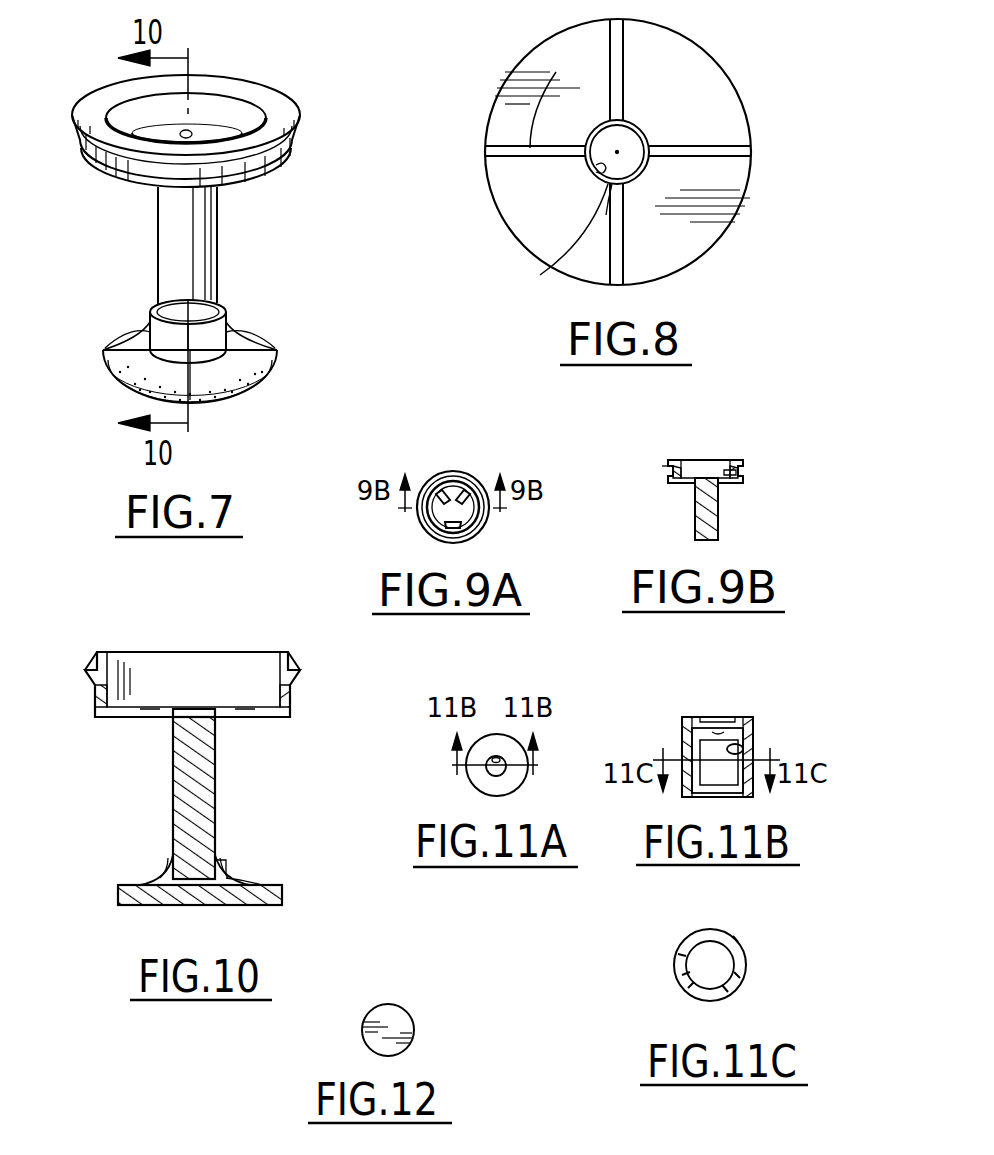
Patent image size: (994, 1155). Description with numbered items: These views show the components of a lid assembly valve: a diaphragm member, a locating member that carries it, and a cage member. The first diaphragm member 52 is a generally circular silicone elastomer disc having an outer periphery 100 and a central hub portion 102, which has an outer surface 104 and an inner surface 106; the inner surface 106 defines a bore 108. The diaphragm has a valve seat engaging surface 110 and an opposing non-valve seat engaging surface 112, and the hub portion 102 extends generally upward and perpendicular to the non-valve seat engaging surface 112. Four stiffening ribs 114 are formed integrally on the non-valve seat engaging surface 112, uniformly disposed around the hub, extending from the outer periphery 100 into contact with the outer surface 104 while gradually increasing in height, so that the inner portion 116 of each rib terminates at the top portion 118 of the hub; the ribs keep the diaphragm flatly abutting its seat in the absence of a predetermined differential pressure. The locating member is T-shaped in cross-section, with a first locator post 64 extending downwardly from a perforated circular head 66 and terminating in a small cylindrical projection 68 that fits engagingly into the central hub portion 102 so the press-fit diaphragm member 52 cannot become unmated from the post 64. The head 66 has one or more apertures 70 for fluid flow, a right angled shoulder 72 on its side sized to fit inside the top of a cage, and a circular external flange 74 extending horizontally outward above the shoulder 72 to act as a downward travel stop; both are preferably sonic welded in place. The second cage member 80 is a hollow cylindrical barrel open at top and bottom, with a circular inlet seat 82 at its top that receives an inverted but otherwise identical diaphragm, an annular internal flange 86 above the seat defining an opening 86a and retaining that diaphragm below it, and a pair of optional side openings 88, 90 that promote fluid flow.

In FIG. 8, the first diaphragm member 52 is at (768, 62).
In FIG. 10, the first diaphragm member 52 is at (118, 898).
In FIG. 12, the first diaphragm member 52 is at (412, 1005).
In FIG. 7, the first locator post 64 is at (220, 222).
In FIG. 9B, the first locator post 64 is at (720, 503).
In FIG. 10, the first locator post 64 is at (219, 757).
In FIG. 7, the perforated circular head 66 is at (186, 131).
In FIG. 9A, the perforated circular head 66 is at (470, 478).
In FIG. 9B, the perforated circular head 66 is at (690, 458).
In FIG. 10, the perforated circular head 66 is at (192, 651).
In FIG. 9B, the small cylindrical projection 68 is at (712, 542).
In FIG. 9A, the apertures 70 is at (428, 493).
In FIG. 9B, the apertures 70 is at (722, 464).
In FIG. 9B, the right angled shoulder 72 is at (676, 490).
In FIG. 10, the circular external flange 74 is at (294, 665).
In FIG. 11A, the second cage member 80 is at (465, 785).
In FIG. 11B, the second cage member 80 is at (668, 732).
In FIG. 11C, the second cage member 80 is at (758, 960).
In FIG. 11B, the circular inlet seat 82 is at (708, 718).
In FIG. 11A, the annular internal flange 86 is at (490, 756).
In FIG. 11B, the annular internal flange 86 is at (725, 722).
In FIG. 11B, the opening 86a is at (716, 728).
In FIG. 11B, the opening 88 is at (745, 752).
In FIG. 11C, the opening 88 is at (718, 932).
In FIG. 11C, the opening 90 is at (720, 995).
In FIG. 7, the outer periphery 100 is at (280, 342).
In FIG. 8, the outer periphery 100 is at (752, 176).
In FIG. 8, the central hub portion 102 is at (645, 134).
In FIG. 10, the central hub portion 102 is at (240, 850).
In FIG. 8, the outer surface 104 is at (646, 170).
In FIG. 7, the inner surface 106 is at (168, 300).
In FIG. 8, the inner surface 106 is at (598, 170).
In FIG. 8, the bore 108 is at (632, 132).
In FIG. 7, the valve seat engaging surface 110 is at (238, 352).
In FIG. 8, the valve seat engaging surface 110 is at (650, 252).
In FIG. 10, the valve seat engaging surface 110 is at (258, 878).
In FIG. 7, the non-valve seat engaging surface 112 is at (232, 397).
In FIG. 10, the non-valve seat engaging surface 112 is at (240, 905).
In FIG. 7, the stiffening ribs 114 is at (240, 340).
In FIG. 8, the stiffening ribs 114 is at (612, 56).
In FIG. 10, the stiffening ribs 114 is at (145, 882).
In FIG. 8, the inner portion 116 is at (545, 270).
In FIG. 10, the inner portion 116 is at (170, 850).
In FIG. 7, the top portion 118 is at (232, 322).
In FIG. 8, the top portion 118 is at (603, 184).
In FIG. 10, the top portion 118 is at (232, 862).